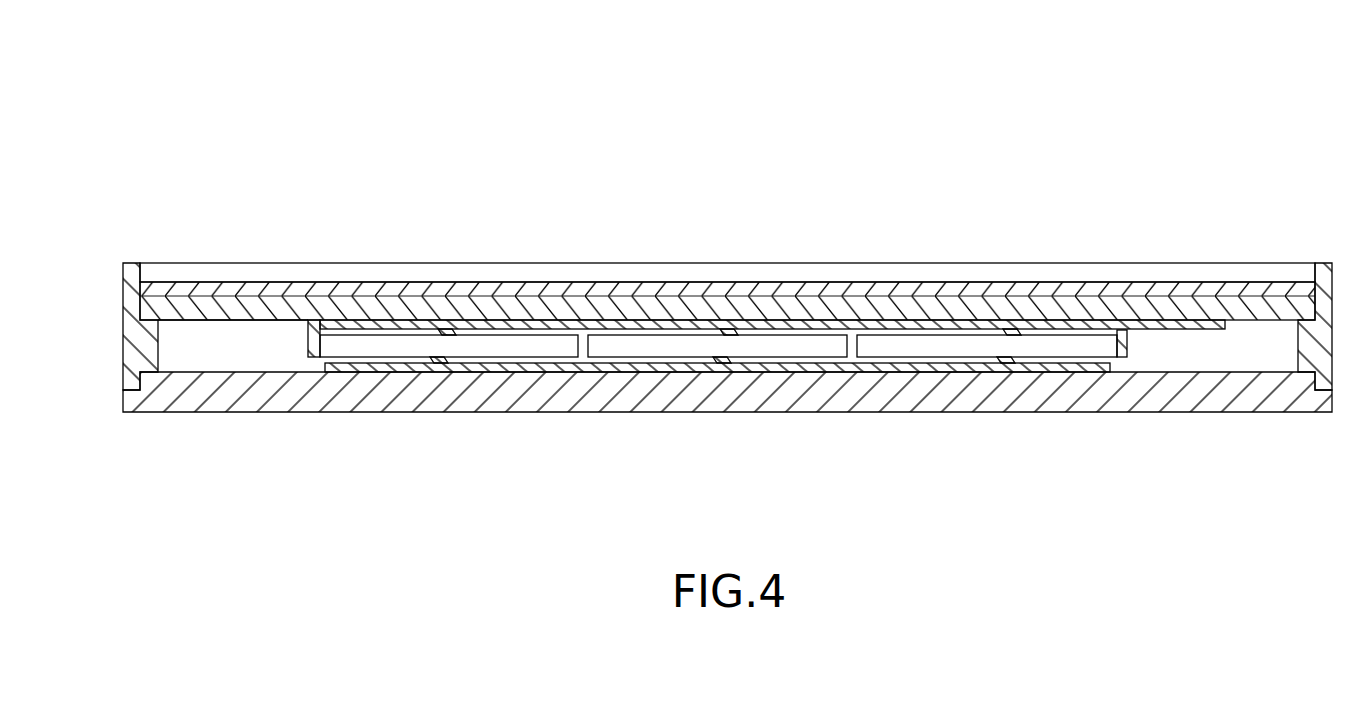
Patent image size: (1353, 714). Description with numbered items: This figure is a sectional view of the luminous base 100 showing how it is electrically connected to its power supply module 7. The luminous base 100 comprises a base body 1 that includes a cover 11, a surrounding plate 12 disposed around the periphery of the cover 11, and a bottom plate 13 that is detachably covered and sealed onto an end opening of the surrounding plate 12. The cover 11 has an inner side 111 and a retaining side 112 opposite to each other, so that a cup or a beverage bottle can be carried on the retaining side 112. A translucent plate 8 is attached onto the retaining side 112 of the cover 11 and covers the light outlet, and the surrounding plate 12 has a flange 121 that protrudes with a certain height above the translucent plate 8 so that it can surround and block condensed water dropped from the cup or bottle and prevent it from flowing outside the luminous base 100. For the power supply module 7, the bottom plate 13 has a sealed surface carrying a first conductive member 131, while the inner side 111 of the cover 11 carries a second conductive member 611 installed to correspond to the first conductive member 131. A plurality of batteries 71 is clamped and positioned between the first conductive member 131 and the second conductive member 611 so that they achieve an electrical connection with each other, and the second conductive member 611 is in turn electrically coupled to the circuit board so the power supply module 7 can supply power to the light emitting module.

The luminous base 100 is at (712, 276).
The base body 1 is at (712, 340).
The cover 11 is at (727, 340).
The inner side 111 is at (187, 322).
The retaining side 112 is at (183, 302).
The surrounding plate 12 is at (712, 330).
The flange 121 is at (1323, 275).
The bottom plate 13 is at (727, 438).
The first conductive member 131 is at (627, 368).
The second conductive member 611 is at (505, 326).
The power supply module 7 is at (1047, 350).
The batteries 71 is at (362, 346).
The translucent plate 8 is at (650, 290).